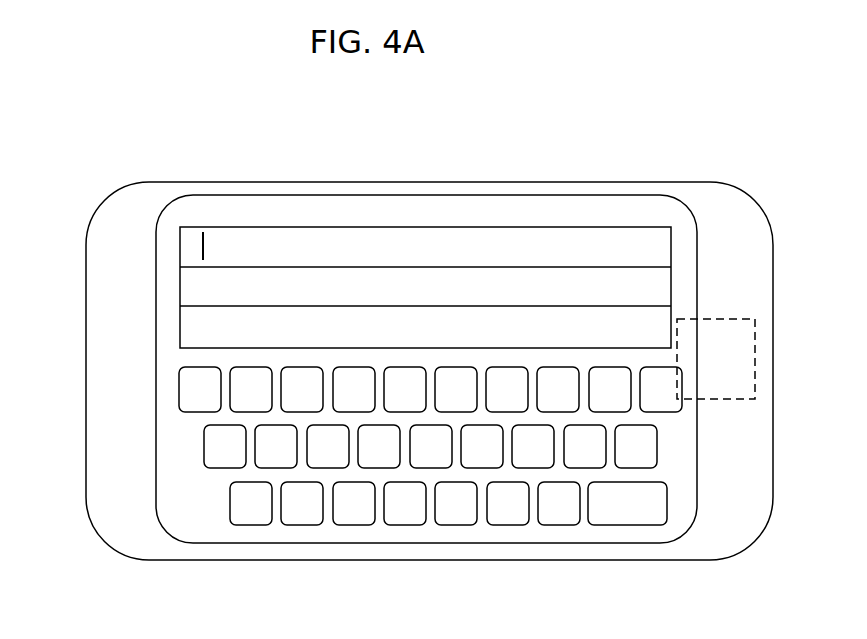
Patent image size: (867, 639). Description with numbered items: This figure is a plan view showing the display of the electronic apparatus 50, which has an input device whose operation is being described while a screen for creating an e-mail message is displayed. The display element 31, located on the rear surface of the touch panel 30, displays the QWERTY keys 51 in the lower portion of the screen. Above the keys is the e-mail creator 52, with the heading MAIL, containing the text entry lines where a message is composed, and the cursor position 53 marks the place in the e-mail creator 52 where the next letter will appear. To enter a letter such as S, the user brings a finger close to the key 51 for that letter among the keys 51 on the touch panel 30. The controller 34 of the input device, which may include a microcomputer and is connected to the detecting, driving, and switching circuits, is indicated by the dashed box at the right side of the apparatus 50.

The touch panel 30 is at (677, 242).
The display element 31 is at (686, 282).
The controller 34 is at (727, 381).
The electronic apparatus 50 is at (542, 182).
The QWERTY keys 51 is at (278, 458).
The e-mail creator 52 is at (360, 245).
The cursor position 53 is at (203, 247).